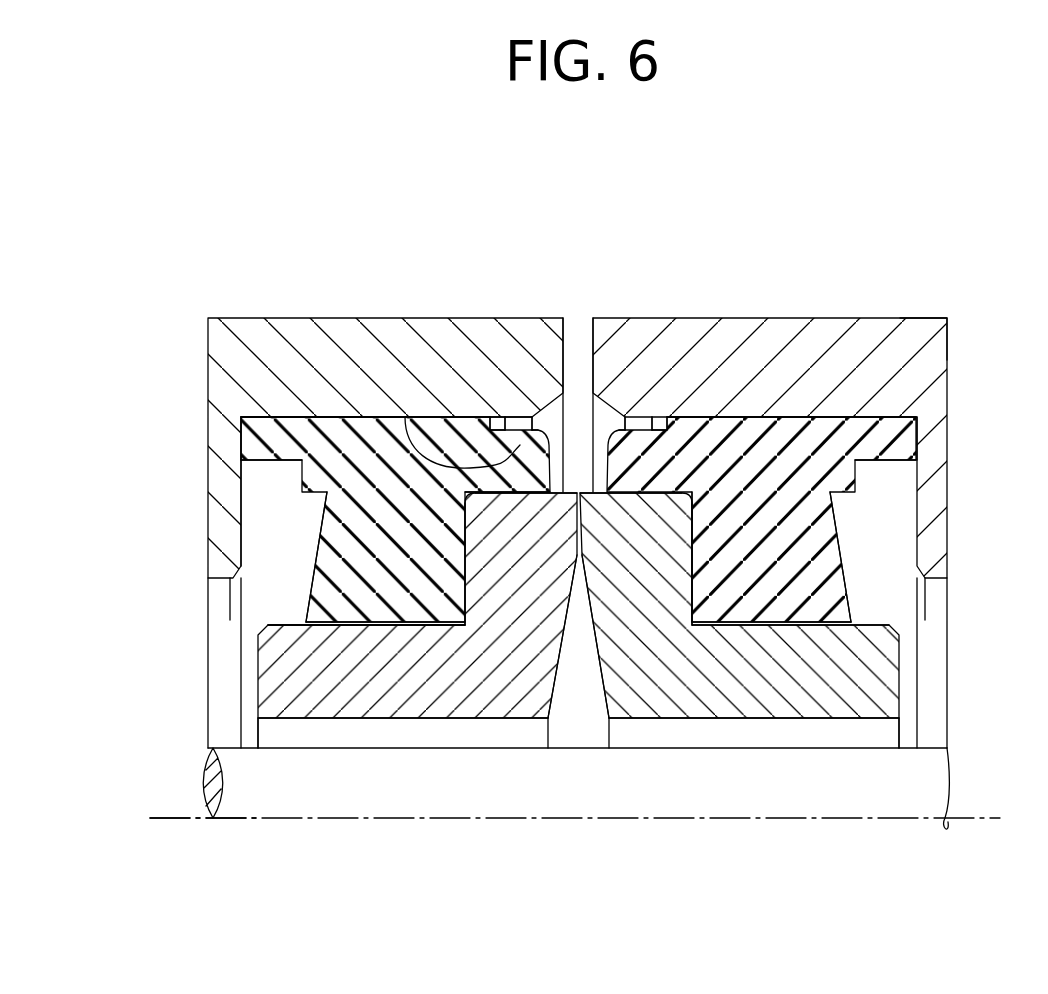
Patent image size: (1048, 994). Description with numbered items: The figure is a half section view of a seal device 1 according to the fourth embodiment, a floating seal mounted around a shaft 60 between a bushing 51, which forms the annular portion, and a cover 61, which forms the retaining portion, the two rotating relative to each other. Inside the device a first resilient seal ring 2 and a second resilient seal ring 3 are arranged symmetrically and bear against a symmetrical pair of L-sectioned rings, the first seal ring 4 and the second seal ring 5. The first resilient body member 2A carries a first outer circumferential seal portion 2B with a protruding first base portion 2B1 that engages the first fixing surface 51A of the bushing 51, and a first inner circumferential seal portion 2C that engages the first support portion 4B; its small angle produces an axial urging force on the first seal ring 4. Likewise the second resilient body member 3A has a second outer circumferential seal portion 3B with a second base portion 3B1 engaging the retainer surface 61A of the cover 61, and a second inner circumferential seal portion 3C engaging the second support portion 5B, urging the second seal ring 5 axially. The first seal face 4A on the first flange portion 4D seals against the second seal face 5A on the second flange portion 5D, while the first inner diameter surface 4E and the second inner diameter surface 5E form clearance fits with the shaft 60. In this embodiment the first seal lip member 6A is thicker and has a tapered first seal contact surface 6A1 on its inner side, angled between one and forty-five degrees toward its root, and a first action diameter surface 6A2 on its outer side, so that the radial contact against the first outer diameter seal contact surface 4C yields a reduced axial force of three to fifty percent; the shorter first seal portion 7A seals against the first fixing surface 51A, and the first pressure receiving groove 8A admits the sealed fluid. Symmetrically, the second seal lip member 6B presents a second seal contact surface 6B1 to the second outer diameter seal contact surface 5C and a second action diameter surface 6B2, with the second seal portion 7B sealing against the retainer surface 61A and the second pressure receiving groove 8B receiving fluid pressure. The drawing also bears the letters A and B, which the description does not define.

The seal device 1 is at (773, 307).
The first resilient seal ring 2 is at (777, 407).
The second resilient seal ring 3 is at (333, 403).
The first seal ring 4 is at (790, 685).
The second seal ring 5 is at (423, 693).
The first resilient body member 2A is at (763, 527).
The first outer circumferential seal portion 2B is at (757, 427).
The first base portion 2B1 is at (905, 440).
The first inner circumferential seal portion 2C is at (790, 595).
The second resilient body member 3A is at (385, 532).
The second outer circumferential seal portion 3B is at (298, 430).
The second base portion 3B1 is at (262, 442).
The second inner circumferential seal portion 3C is at (385, 598).
The first seal face 4A is at (557, 545).
The first support portion 4B is at (735, 605).
The first outer diameter seal contact surface 4C is at (690, 495).
The first flange portion 4D is at (668, 555).
The first inner diameter surface 4E is at (837, 593).
The second seal face 5A is at (627, 550).
The second support portion 5B is at (407, 627).
The second outer diameter seal contact surface 5C is at (528, 492).
The second flange portion 5D is at (493, 550).
The second inner diameter surface 5E is at (295, 720).
The first seal lip member 6A is at (870, 465).
The first seal contact surface 6A1 is at (625, 425).
The first action diameter surface 6A2 is at (672, 415).
The second seal lip member 6B is at (405, 417).
The second seal contact surface 6B1 is at (543, 413).
The second action diameter surface 6B2 is at (500, 418).
The first seal portion 7A is at (687, 417).
The second seal portion 7B is at (500, 418).
The first pressure receiving groove 8A is at (955, 322).
The second pressure receiving groove 8B is at (440, 628).
The bushing 51 is at (825, 338).
The first fixing surface 51A is at (920, 417).
The shaft 60 is at (927, 787).
The cover 61 is at (258, 347).
The retainer surface 61A is at (320, 470).
The gap A is at (576, 347).
The section line B is at (165, 723).